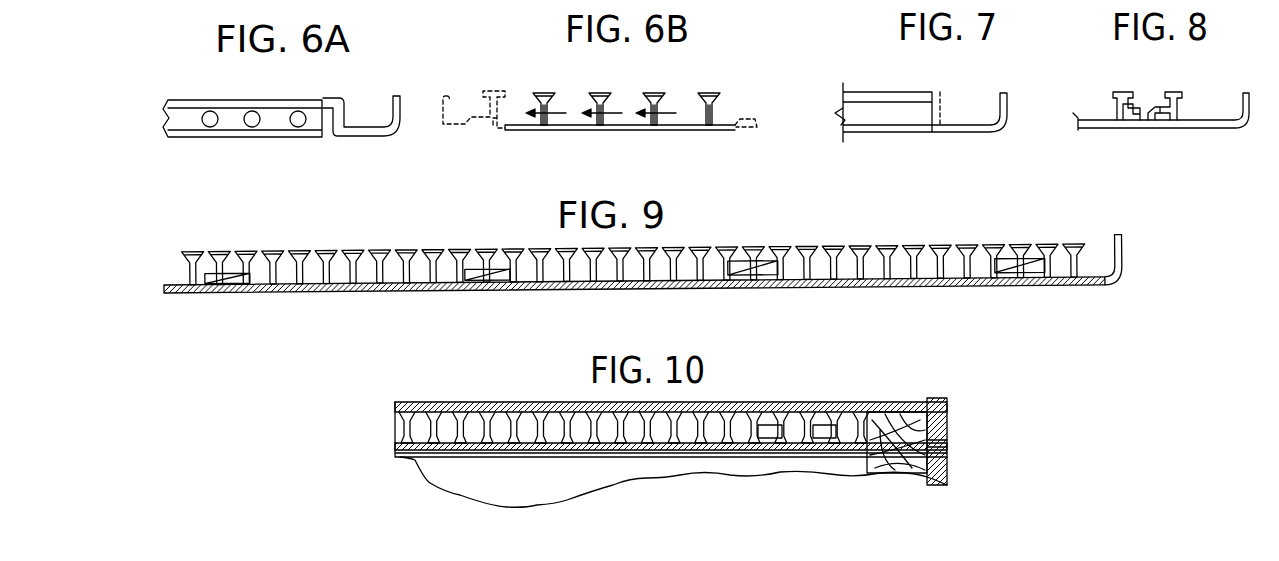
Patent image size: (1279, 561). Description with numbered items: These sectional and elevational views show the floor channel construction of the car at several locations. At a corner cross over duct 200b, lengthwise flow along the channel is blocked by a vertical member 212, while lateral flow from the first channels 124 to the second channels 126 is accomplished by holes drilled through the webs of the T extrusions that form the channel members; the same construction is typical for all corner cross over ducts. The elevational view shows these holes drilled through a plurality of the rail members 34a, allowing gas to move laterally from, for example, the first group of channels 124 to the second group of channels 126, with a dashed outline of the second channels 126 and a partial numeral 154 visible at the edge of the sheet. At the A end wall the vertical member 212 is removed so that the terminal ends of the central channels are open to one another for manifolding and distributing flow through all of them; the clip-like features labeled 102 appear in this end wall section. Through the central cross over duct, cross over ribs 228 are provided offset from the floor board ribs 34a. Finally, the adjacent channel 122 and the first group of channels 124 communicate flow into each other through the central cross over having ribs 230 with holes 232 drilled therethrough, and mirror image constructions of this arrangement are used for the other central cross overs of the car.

In FIG. 6B, the rail member 34a is at (546, 92).
In FIG. 7, the rail member 34a is at (876, 92).
In FIG. 9, the rail member 34a is at (462, 252).
In FIG. 8, the latch clip 102 is at (1147, 95).
In FIG. 9, the adjacent channel 122 is at (1095, 250).
In FIG. 10, the adjacent channel 122 is at (842, 415).
In FIG. 6B, the first channels 124 is at (578, 95).
In FIG. 10, the first channels 124 is at (780, 394).
In FIG. 6B, the second channels 126 is at (457, 100).
In FIG. 6B, the connector body 154 is at (464, 7).
In FIG. 6A, the corner cross over duct 200b is at (274, 99).
In FIG. 6A, the vertical member 212 is at (343, 118).
In FIG. 9, the cross over ribs 228 is at (868, 250).
In FIG. 10, the ribs 230 is at (758, 404).
In FIG. 10, the holes 232 is at (763, 428).